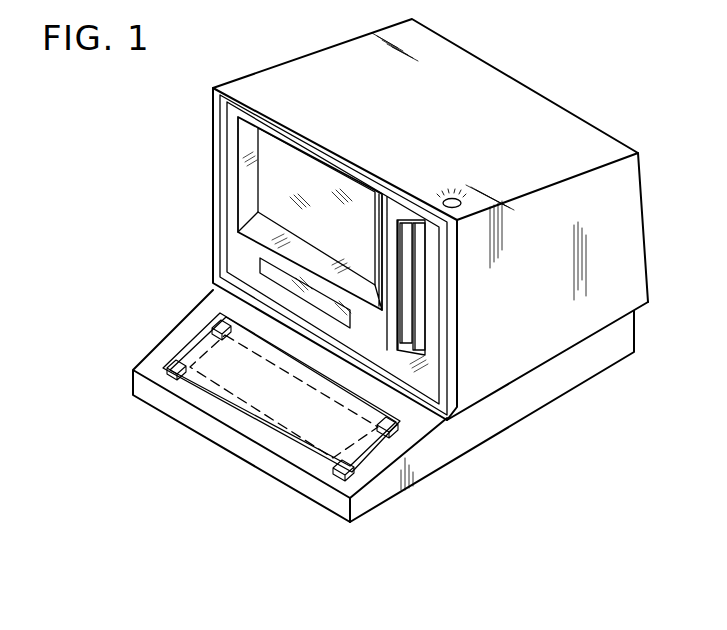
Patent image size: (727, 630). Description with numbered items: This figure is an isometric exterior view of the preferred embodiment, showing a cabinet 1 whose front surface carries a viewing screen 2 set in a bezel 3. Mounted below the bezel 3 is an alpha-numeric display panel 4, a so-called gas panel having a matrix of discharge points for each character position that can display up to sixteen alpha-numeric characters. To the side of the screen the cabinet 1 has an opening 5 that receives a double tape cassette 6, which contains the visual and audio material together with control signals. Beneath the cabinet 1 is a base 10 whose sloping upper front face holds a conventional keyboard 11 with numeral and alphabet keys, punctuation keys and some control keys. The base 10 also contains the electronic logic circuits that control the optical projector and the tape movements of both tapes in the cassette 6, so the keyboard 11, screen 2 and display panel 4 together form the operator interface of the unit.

The cabinet 1 is at (600, 137).
The viewing screen 2 is at (272, 177).
The bezel 3 is at (252, 190).
The alpha-numeric display panel 4 is at (265, 270).
The opening 5 is at (423, 259).
The double tape cassette 6 is at (412, 318).
The base 10 is at (487, 430).
The keyboard 11 is at (183, 343).